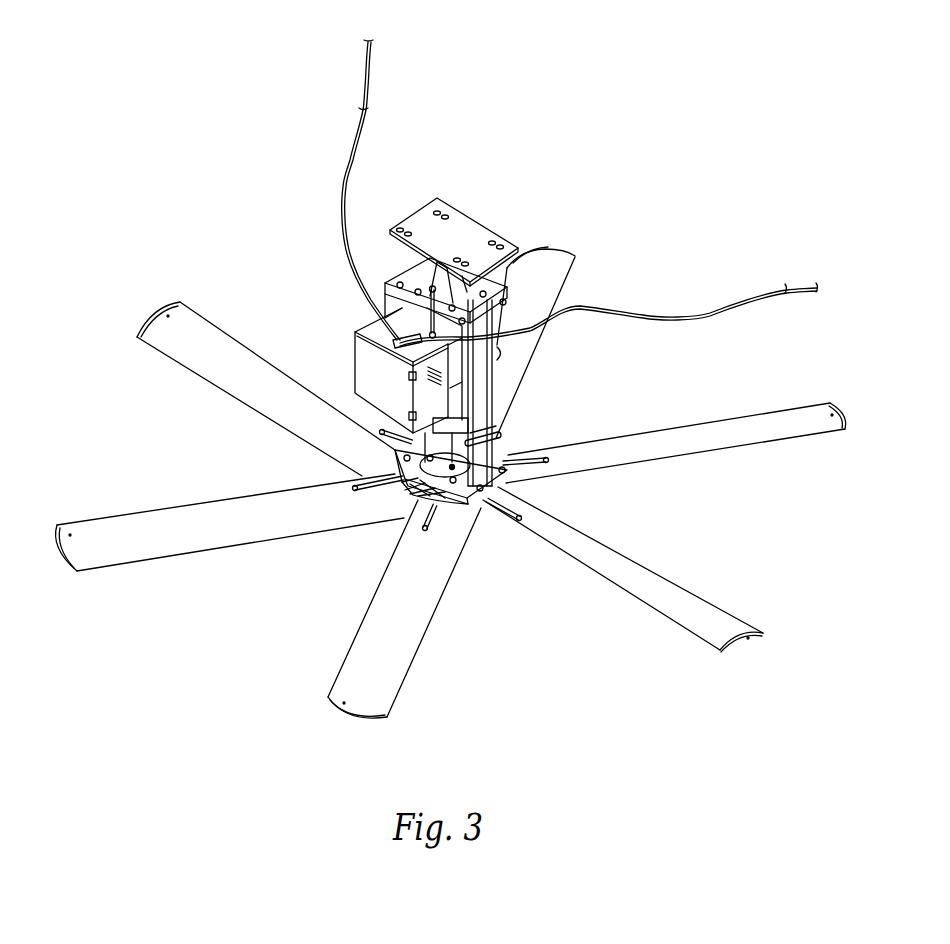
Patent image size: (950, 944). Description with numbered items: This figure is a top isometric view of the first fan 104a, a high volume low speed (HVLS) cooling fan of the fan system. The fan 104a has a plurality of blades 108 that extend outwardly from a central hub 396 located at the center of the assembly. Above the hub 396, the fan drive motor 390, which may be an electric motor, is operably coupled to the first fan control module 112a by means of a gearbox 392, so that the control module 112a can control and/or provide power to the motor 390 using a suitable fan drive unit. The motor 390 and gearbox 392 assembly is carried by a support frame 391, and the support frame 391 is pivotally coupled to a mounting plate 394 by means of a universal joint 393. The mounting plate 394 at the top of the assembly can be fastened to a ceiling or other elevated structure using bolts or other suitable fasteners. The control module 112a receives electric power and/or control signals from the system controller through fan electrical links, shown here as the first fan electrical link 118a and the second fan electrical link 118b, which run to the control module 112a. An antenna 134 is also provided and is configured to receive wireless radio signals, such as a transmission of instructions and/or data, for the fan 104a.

The first fan 104a is at (219, 156).
The blade 108 is at (417, 645).
The first fan control module 112a is at (370, 368).
The first fan electrical link 118a is at (693, 310).
The second fan electrical link 118b is at (360, 148).
The antenna 134 is at (400, 283).
The fan drive motor 390 is at (463, 363).
The support frame 391 is at (487, 418).
The gearbox 392 is at (438, 438).
The universal joint 393 is at (533, 258).
The mounting plate 394 is at (458, 232).
The central hub 396 is at (477, 500).